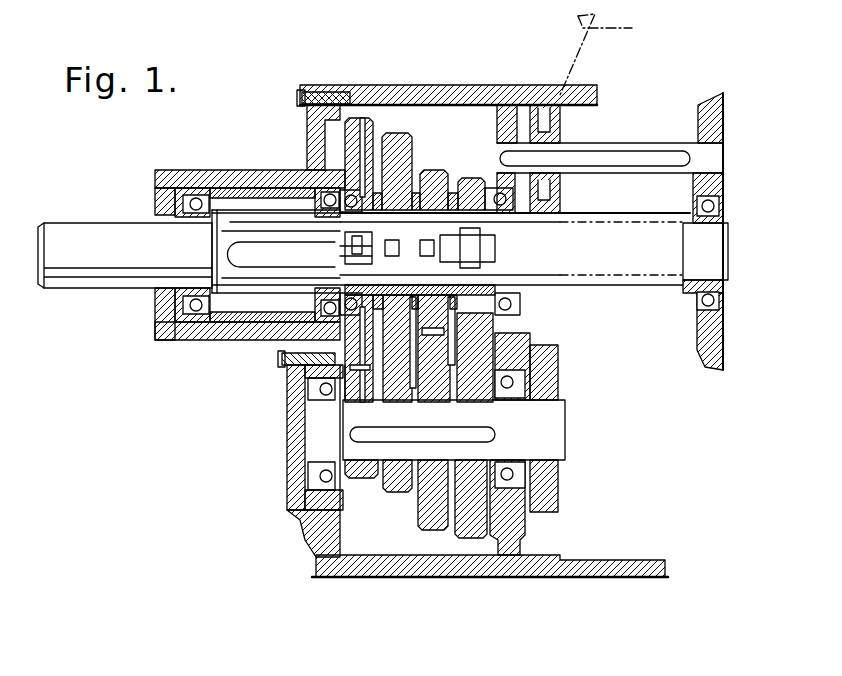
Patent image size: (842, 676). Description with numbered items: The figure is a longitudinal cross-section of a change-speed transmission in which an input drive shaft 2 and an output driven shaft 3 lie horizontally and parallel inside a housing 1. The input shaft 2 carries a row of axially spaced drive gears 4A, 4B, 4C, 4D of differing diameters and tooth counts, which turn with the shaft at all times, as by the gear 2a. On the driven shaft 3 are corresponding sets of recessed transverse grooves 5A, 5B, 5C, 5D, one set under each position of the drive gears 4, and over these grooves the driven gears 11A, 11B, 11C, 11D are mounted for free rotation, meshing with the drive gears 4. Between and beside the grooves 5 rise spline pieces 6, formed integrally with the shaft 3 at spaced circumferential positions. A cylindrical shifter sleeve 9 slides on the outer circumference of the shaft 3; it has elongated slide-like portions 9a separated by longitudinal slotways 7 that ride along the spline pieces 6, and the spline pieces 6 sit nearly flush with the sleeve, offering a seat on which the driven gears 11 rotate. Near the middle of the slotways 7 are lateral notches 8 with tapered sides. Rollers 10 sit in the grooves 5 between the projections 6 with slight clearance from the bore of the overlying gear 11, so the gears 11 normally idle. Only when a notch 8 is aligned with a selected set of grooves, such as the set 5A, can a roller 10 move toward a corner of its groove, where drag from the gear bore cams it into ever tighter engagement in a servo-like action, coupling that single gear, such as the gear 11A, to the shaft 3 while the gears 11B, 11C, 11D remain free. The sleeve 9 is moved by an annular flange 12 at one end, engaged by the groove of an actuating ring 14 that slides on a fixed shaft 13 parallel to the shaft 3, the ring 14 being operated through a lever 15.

The housing 1 is at (524, 62).
The input drive shaft 2 is at (562, 445).
The gear 2a is at (552, 490).
The output driven shaft 3 is at (88, 286).
The drive gears 4 is at (466, 169).
The drive gear 4A is at (367, 478).
The drive gear 4B is at (397, 492).
The drive gear 4C is at (432, 530).
The drive gear 4D is at (470, 538).
The recessed transverse grooves 5 is at (608, 325).
The set of recessed transverse grooves 5A is at (372, 287).
The set of recessed transverse grooves 5B is at (400, 277).
The set of recessed transverse grooves 5C is at (432, 277).
The set of recessed transverse grooves 5D is at (468, 277).
The spline pieces 6 is at (345, 248).
The longitudinal slotways 7 is at (262, 256).
The lateral notches 8 is at (357, 240).
The shifter sleeve 9 is at (245, 231).
The slide-like portions 9a is at (250, 232).
The rollers 10 is at (480, 247).
The driven gears 11 is at (496, 40).
The driven gear 11A is at (358, 118).
The driven gear 11B is at (398, 133).
The driven gear 11C is at (432, 170).
The driven gear 11D is at (470, 178).
The annular flange 12 is at (560, 195).
The fixed shaft 13 is at (655, 152).
The actuating ring 14 is at (562, 128).
The lever 15 is at (609, 54).